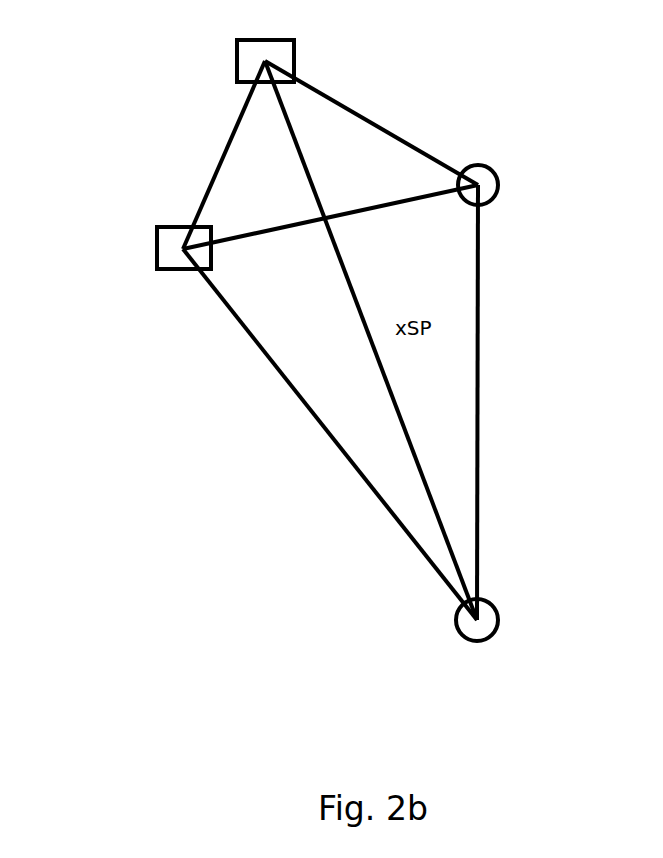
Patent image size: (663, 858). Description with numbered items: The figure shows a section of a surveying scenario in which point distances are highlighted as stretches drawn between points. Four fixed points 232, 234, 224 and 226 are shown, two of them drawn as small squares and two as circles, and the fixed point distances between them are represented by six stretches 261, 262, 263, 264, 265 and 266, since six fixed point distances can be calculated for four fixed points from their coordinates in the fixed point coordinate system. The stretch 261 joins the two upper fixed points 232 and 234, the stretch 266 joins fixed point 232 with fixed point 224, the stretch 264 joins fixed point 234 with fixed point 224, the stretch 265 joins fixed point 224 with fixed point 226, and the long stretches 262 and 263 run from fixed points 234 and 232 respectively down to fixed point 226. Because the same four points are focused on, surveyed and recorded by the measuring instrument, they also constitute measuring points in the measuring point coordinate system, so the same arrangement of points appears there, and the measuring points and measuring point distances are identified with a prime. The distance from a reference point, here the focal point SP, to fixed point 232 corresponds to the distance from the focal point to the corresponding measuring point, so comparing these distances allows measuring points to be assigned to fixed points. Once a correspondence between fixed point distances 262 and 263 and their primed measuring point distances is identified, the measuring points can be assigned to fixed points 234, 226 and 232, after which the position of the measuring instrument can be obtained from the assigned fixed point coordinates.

The fixed point 232 is at (294, 60).
The fixed point 234 is at (157, 250).
The fixed point 224 is at (497, 175).
The fixed point 226 is at (470, 642).
The stretch 261 is at (223, 153).
The fixed point distance 262 is at (257, 343).
The fixed point distance 263 is at (350, 283).
The stretch 264 is at (248, 237).
The stretch 265 is at (478, 393).
The stretch 266 is at (375, 120).